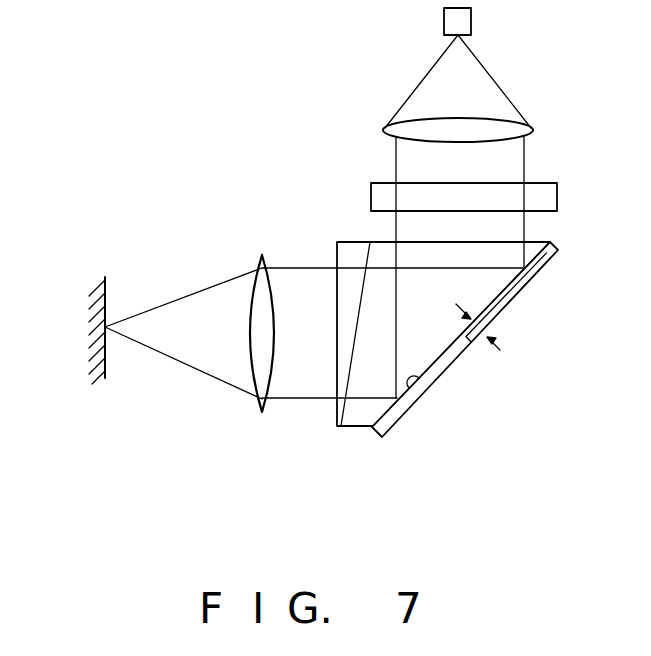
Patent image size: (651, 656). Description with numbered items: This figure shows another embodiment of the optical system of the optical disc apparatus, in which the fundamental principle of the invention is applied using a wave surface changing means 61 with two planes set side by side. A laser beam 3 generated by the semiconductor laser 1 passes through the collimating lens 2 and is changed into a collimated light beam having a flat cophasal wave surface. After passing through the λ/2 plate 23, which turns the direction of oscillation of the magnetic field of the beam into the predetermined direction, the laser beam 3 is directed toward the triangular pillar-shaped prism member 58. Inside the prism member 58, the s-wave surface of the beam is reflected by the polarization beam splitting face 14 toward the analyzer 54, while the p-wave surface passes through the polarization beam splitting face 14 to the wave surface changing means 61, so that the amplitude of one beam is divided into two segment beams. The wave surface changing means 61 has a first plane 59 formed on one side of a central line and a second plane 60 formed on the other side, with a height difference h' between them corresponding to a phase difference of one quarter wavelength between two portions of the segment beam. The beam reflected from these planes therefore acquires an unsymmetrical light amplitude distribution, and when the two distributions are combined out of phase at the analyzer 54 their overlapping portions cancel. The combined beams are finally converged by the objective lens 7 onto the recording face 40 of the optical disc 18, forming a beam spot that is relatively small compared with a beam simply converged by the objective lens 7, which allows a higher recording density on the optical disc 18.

The semiconductor laser 1 is at (471, 24).
The collimating lens 2 is at (528, 127).
The laser beam 3 is at (470, 78).
The λ/2 plate 23 is at (548, 200).
The analyzer 54 is at (352, 427).
The prism member 58 is at (382, 247).
The first plane 59 is at (549, 264).
The second plane 60 is at (440, 380).
The wave surface changing means 61 is at (458, 350).
The height difference h' is at (494, 327).
The polarization beam splitting face 14 is at (417, 393).
The objective lens 7 is at (262, 413).
The recording face 40 is at (107, 304).
The optical disc 18 is at (80, 318).